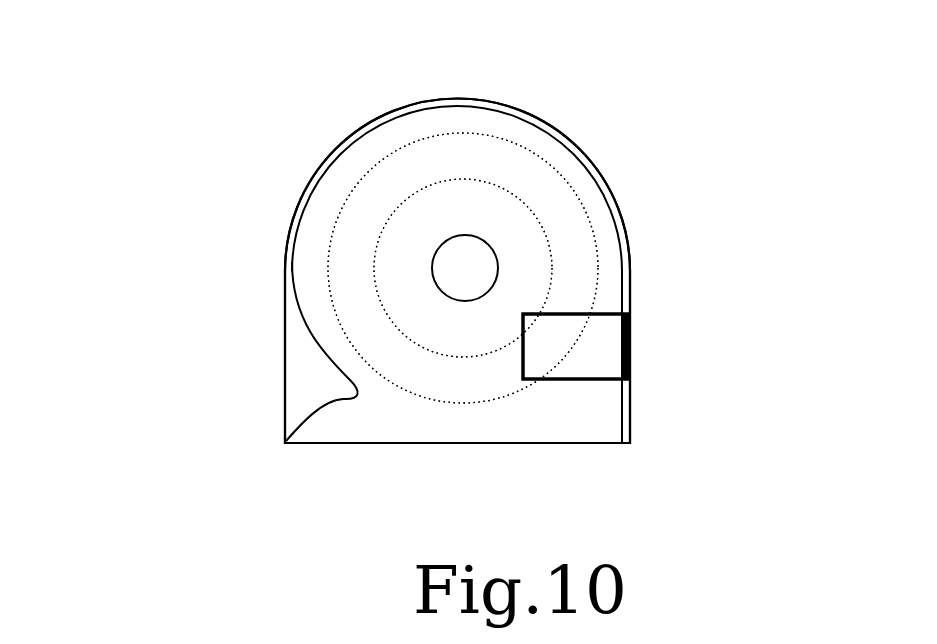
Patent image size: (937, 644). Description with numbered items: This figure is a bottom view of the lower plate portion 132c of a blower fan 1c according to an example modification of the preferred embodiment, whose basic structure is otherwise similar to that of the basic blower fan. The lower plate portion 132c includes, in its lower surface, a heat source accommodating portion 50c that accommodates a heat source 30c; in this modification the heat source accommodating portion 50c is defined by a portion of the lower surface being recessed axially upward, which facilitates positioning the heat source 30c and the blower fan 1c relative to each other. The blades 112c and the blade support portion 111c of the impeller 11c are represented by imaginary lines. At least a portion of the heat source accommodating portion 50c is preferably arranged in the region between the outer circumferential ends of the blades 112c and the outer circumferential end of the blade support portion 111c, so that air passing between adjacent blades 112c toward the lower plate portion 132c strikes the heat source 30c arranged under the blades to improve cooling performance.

The blower fan 1c is at (625, 51).
The impeller 11c is at (355, 218).
The blade support portion 111c is at (543, 233).
The blades 112c is at (382, 163).
The heat source 30c is at (601, 340).
The heat source accommodating portion 50c is at (608, 362).
The lower plate portion 132c is at (568, 418).